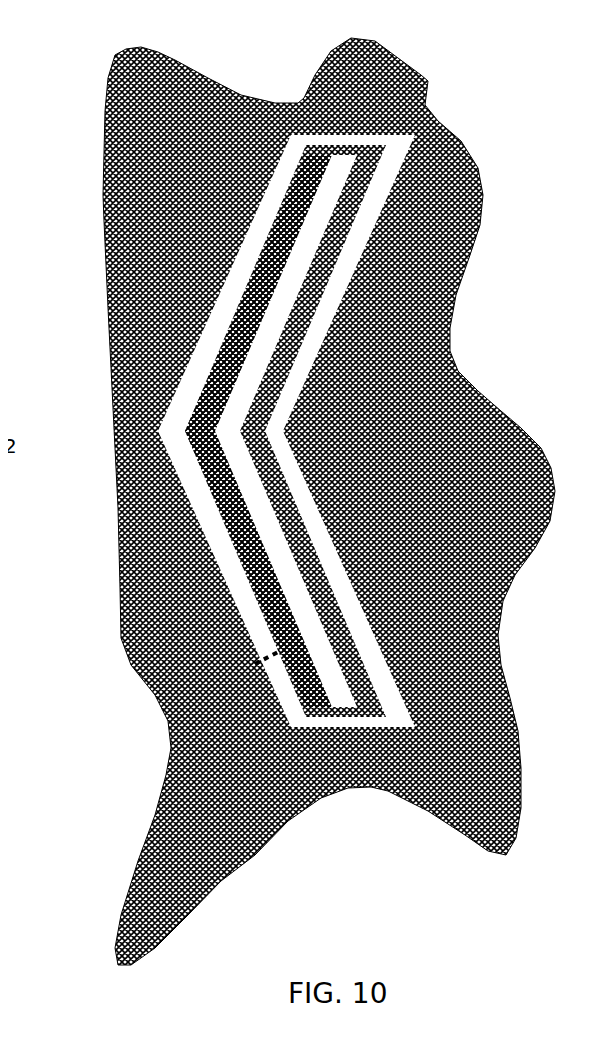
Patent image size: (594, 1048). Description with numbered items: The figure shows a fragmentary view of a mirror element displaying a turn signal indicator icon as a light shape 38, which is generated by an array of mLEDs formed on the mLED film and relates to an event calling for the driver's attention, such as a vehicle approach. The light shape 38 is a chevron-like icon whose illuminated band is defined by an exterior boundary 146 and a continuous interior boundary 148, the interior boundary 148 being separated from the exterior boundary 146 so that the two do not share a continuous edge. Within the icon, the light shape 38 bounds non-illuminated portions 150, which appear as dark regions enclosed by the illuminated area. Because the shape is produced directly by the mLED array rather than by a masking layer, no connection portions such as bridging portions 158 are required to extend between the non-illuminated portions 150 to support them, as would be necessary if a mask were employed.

The light shape 38 is at (221, 383).
The exterior boundary 146 is at (256, 179).
The continuous interior boundary 148 is at (266, 222).
The non-illuminated portions 150 is at (330, 143).
The bridging portions 158 is at (124, 657).